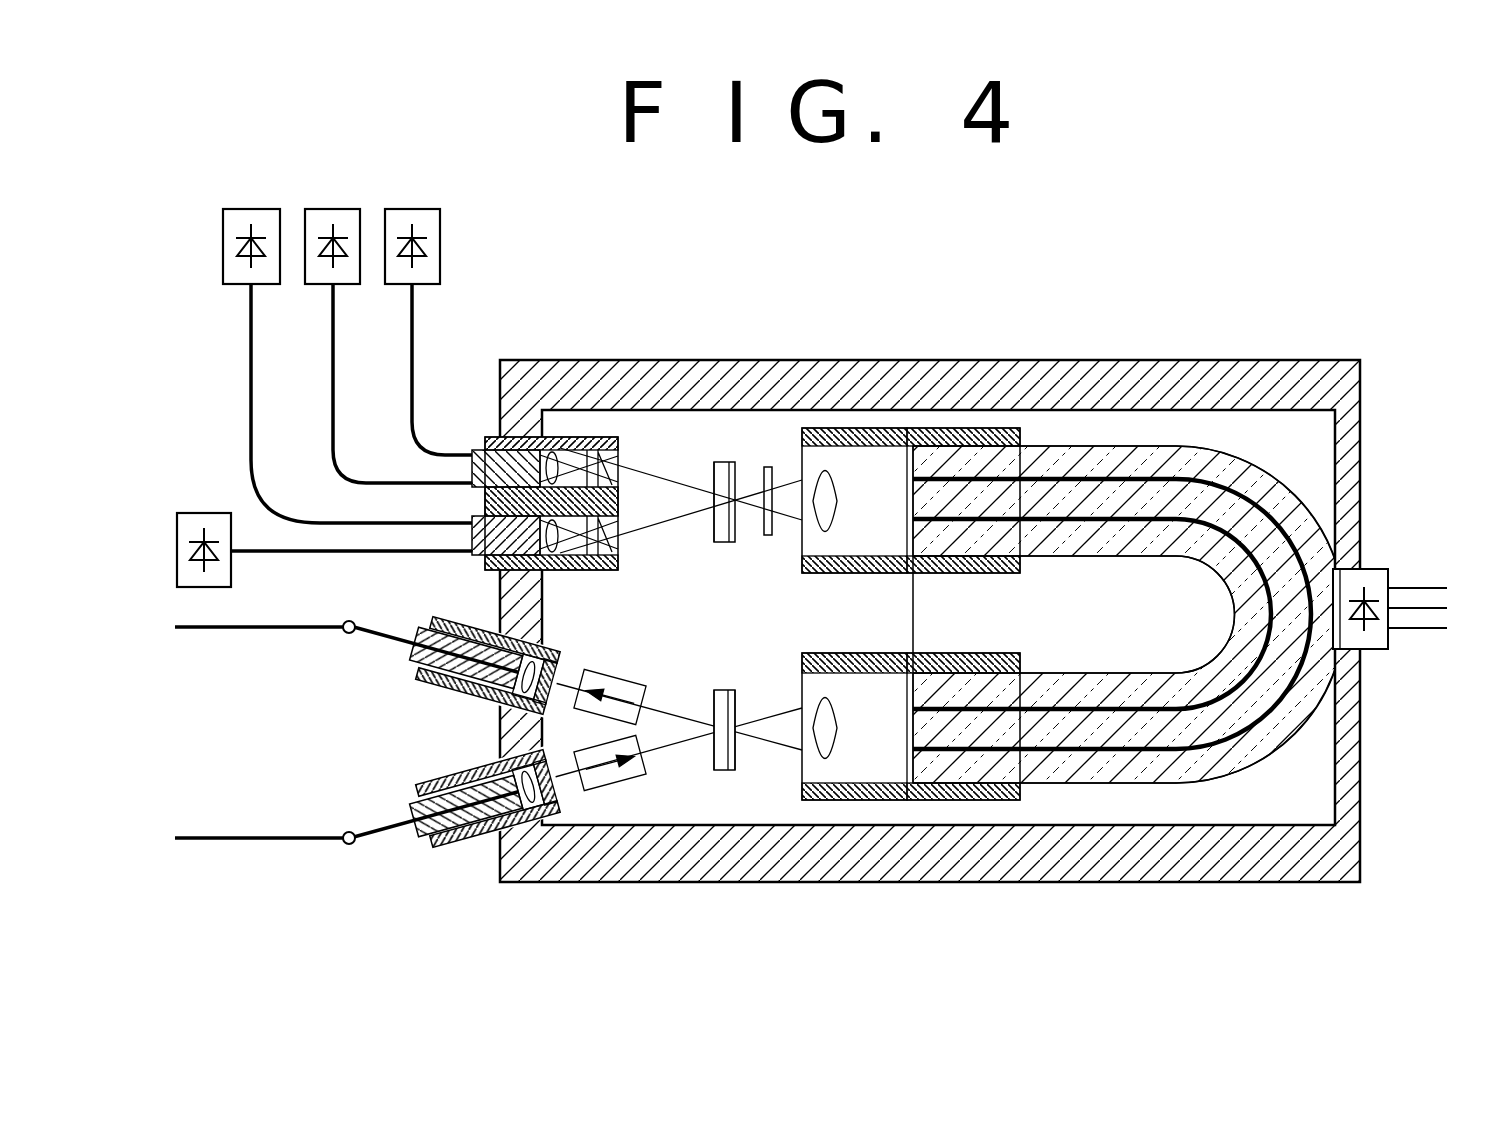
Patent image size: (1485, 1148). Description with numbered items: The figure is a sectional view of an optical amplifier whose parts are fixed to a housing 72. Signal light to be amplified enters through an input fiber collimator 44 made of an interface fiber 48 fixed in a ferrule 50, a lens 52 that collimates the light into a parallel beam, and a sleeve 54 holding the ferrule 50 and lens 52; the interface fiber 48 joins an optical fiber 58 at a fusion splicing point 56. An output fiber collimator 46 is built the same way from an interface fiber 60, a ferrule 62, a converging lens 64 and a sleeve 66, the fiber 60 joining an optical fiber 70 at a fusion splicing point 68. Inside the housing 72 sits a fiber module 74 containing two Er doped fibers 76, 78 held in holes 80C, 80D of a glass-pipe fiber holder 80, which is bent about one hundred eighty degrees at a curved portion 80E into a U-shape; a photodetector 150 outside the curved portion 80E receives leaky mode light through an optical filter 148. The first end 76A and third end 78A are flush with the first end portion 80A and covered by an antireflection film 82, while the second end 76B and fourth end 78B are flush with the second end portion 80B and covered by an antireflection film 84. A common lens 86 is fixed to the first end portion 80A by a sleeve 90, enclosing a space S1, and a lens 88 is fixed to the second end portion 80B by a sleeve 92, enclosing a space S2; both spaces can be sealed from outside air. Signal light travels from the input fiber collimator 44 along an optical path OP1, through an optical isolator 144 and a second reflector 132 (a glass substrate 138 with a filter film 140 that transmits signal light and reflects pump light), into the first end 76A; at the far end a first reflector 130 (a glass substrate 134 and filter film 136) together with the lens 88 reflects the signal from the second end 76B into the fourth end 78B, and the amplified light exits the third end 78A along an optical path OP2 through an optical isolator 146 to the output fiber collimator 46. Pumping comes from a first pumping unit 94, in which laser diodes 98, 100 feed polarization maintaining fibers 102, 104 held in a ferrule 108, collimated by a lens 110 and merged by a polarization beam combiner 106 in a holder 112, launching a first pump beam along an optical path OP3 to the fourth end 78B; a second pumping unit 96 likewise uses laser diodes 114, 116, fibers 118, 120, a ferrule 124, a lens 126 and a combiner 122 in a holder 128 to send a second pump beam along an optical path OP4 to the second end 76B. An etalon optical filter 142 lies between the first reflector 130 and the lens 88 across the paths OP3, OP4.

The input fiber collimator 44 is at (480, 860).
The output fiber collimator 46 is at (433, 656).
The interface fiber 48 is at (422, 849).
The ferrule 50 is at (415, 830).
The lens 52 is at (545, 845).
The sleeve 54 is at (442, 845).
The fusion splicing point 56 is at (344, 834).
The optical fiber 58 is at (268, 848).
The interface fiber 60 is at (398, 645).
The ferrule 62 is at (418, 660).
The lens 64 is at (520, 700).
The sleeve 66 is at (425, 685).
The fusion splicing point 68 is at (345, 622).
The optical fiber 70 is at (268, 636).
The housing 72 is at (1290, 882).
The fiber module 74 is at (1190, 800).
The doped fiber 76 is at (1165, 545).
The first end 76A is at (888, 767).
The second end 76B is at (910, 458).
The doped fiber 78 is at (1158, 700).
The third end 78A is at (888, 800).
The fourth end 78B is at (882, 470).
The fiber holder 80 is at (1191, 613).
The first end portion 80A is at (950, 785).
The second end portion 80B is at (1062, 450).
The hole 80C is at (1092, 614).
The hole 80D is at (1112, 614).
The curved portion 80E is at (1305, 700).
The antireflection film 82 is at (862, 730).
The antireflection film 84 is at (840, 503).
The lens 86 is at (808, 690).
The lens 88 is at (830, 470).
The sleeve 90 is at (832, 800).
The sleeve 92 is at (960, 428).
The first pumping unit 94 is at (650, 585).
The second pumping unit 96 is at (620, 415).
The laser diode 98 is at (215, 513).
The laser diode 100 is at (235, 209).
The polarization maintaining fiber 102 is at (290, 551).
The polarization maintaining fiber 104 is at (240, 362).
The polarization beam combiner 106 is at (600, 570).
The ferrule 108 is at (478, 552).
The lens 110 is at (560, 570).
The holder 112 is at (485, 500).
The laser diode 114 is at (317, 209).
The laser diode 116 is at (397, 209).
The polarization maintaining fiber 118 is at (322, 362).
The polarization maintaining fiber 120 is at (402, 362).
The polarization beam combiner 122 is at (514, 468).
The ferrule 124 is at (478, 452).
The lens 126 is at (548, 437).
The holder 128 is at (505, 437).
The first reflector 130 is at (725, 416).
The second reflector 132 is at (742, 812).
The glass substrate 134 is at (716, 460).
The filter film 136 is at (733, 460).
The glass substrate 138 is at (722, 790).
The filter film 140 is at (745, 790).
The optical filter 142 is at (768, 467).
The optical isolator 144 is at (605, 800).
The optical isolator 146 is at (612, 680).
The optical filter 148 is at (1330, 580).
The photodetector 150 is at (1390, 645).
The space S1 is at (825, 700).
The space S2 is at (835, 560).
The optical path OP1 is at (672, 752).
The optical path OP2 is at (692, 705).
The optical path OP3 is at (685, 520).
The optical path OP4 is at (675, 484).